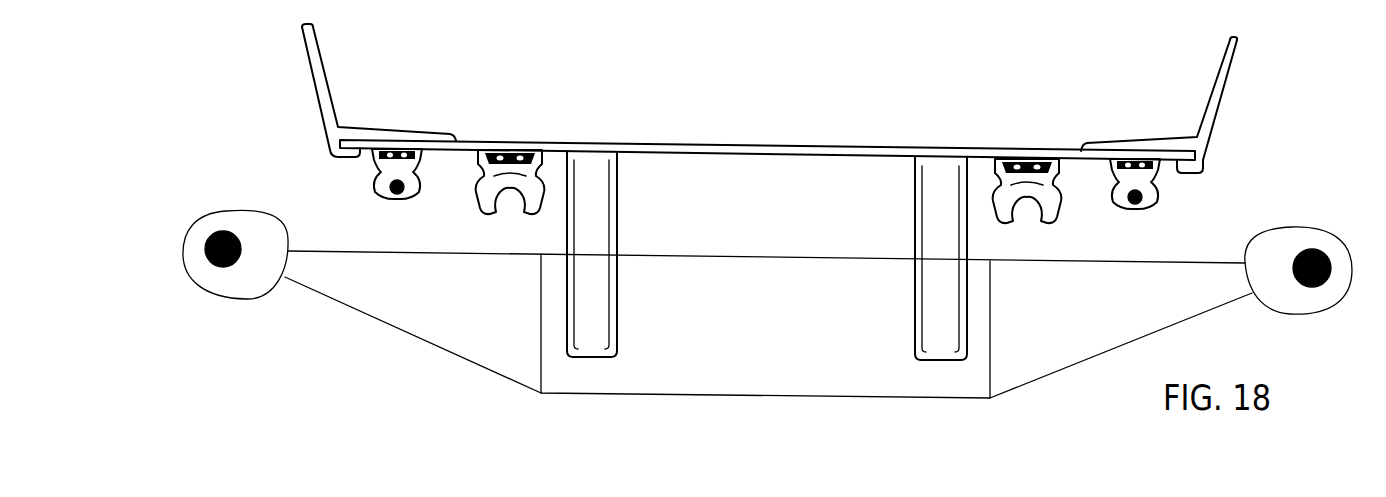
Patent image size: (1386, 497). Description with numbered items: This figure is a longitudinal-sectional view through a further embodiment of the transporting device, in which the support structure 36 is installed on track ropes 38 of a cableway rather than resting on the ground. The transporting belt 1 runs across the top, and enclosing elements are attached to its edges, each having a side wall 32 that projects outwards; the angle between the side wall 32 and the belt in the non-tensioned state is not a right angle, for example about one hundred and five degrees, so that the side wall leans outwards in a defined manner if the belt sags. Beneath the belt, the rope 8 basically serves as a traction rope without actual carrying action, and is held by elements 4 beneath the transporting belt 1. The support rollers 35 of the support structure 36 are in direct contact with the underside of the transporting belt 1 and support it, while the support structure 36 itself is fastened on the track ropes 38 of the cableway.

The transporting belt 1 is at (797, 143).
The clamping bracket / holder 4 is at (348, 198).
The rope 8 is at (402, 195).
The side wall 32 is at (313, 78).
The support rollers 35 is at (588, 340).
The support structure 36 is at (697, 255).
The track ropes 38 is at (217, 267).